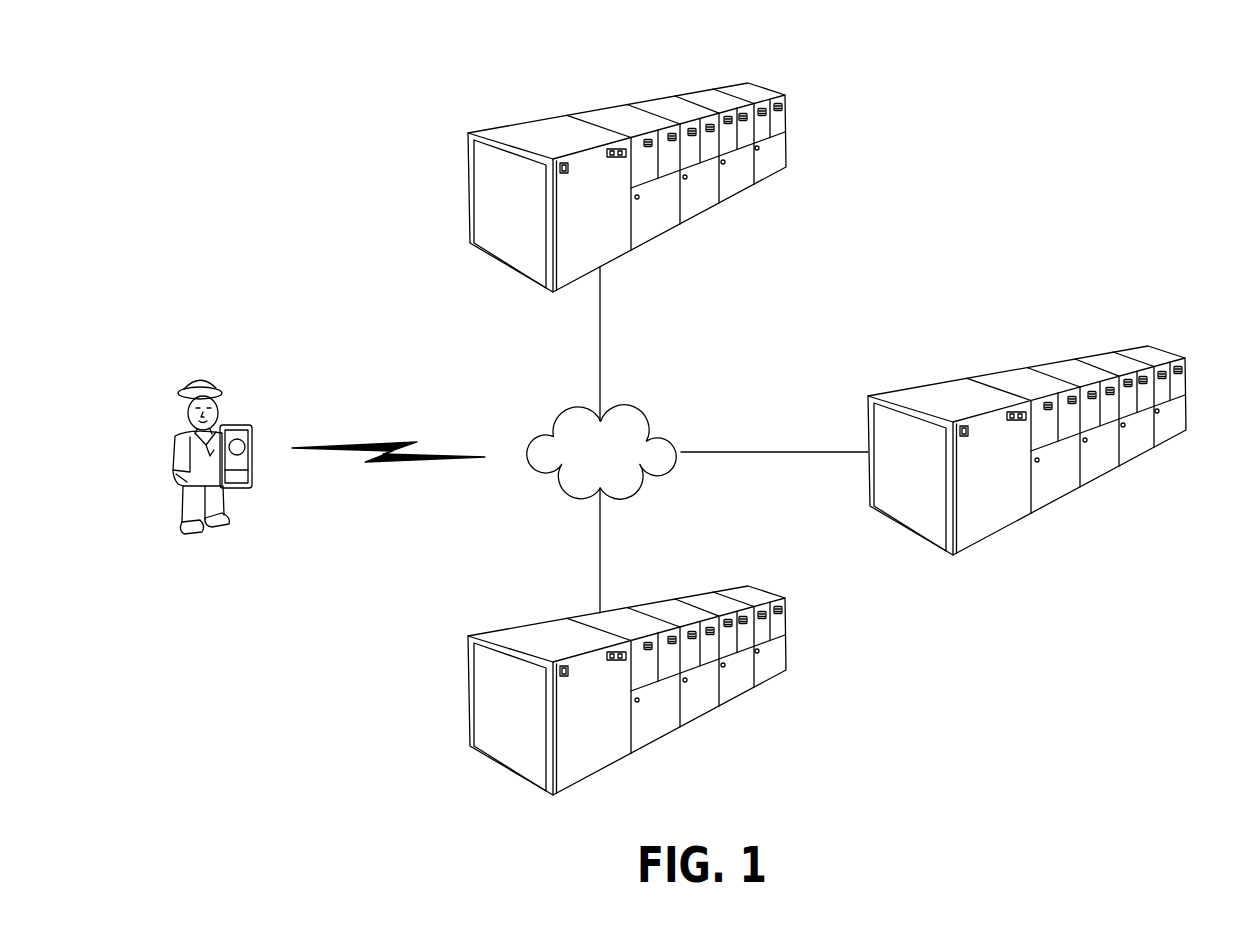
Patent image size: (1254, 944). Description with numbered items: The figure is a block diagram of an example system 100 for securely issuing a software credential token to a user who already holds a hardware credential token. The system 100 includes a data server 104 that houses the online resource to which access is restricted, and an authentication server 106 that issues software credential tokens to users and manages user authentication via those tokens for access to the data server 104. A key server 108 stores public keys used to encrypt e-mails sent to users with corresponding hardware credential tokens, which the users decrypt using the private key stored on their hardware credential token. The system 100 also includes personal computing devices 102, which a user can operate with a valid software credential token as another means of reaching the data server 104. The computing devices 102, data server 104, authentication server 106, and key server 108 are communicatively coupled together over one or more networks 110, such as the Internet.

The system 100 is at (1028, 70).
The personal computing device 102 is at (253, 442).
The data server 104 is at (1187, 415).
The authentication server 106 is at (787, 152).
The key server 108 is at (787, 655).
The network 110 is at (652, 423).